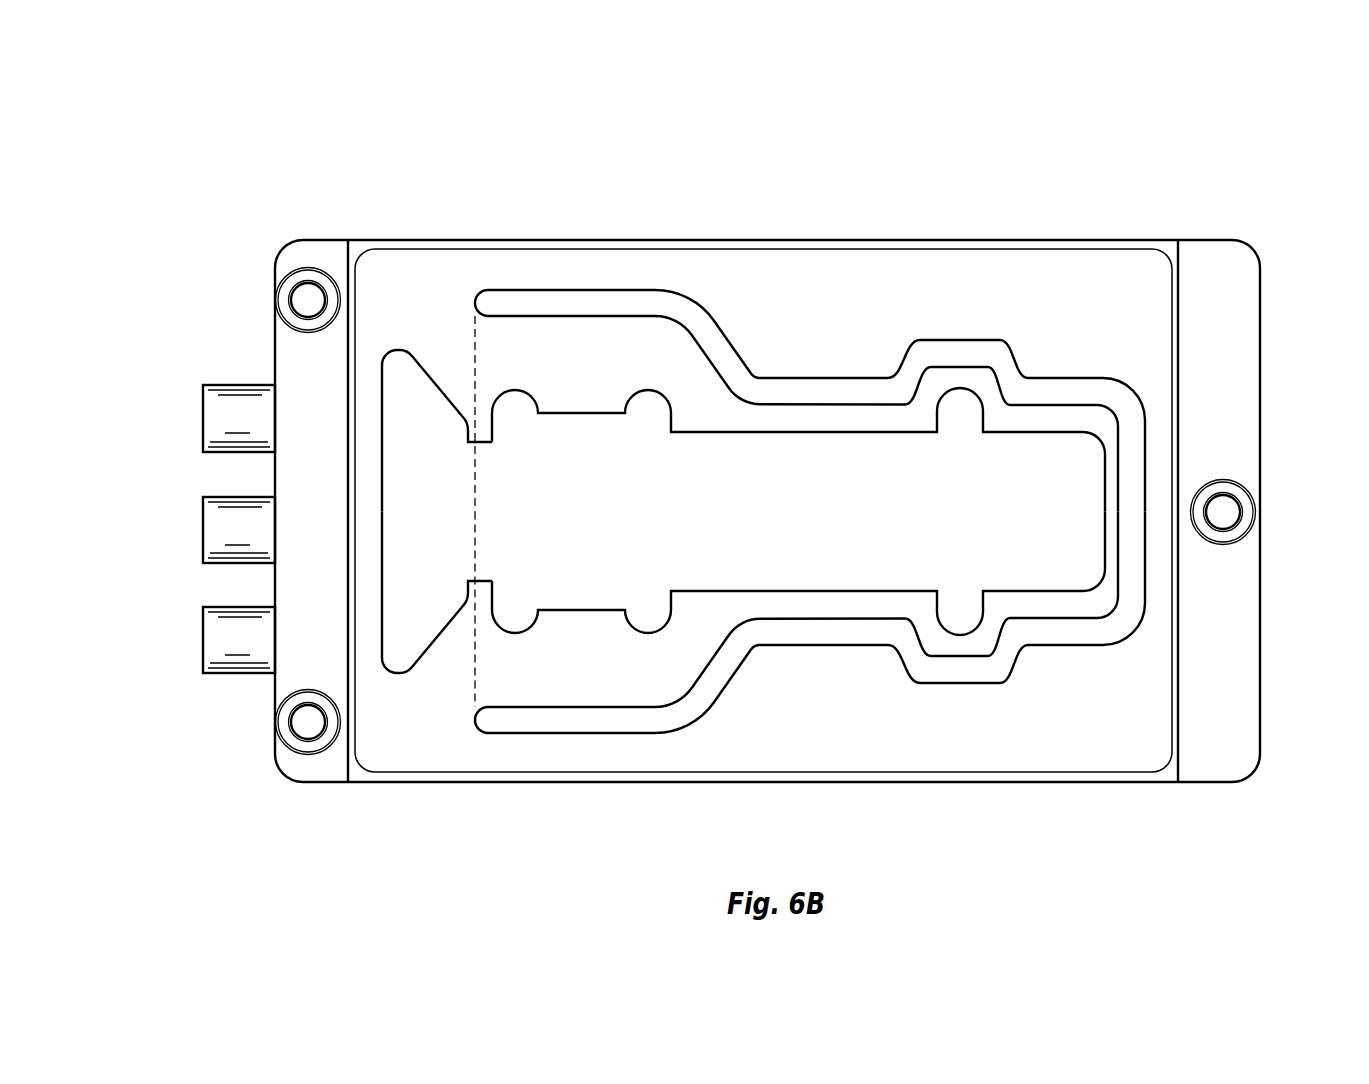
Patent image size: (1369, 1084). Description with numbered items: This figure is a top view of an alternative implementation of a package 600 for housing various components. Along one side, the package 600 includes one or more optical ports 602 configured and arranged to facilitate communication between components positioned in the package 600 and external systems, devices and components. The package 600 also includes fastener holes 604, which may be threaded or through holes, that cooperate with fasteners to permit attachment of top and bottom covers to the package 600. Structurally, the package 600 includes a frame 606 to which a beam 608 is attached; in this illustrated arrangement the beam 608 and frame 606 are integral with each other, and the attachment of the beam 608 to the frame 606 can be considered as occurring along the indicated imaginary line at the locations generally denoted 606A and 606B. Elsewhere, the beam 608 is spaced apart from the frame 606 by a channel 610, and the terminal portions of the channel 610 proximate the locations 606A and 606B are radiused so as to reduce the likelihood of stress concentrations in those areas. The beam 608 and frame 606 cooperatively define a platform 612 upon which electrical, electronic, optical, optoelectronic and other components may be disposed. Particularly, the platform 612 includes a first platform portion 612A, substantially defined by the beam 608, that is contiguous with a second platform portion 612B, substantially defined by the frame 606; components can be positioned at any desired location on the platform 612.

The package 600 is at (793, 170).
The optical ports 602 is at (203, 427).
The fastener holes 604 is at (303, 298).
The frame 606 is at (1065, 740).
The location 606A is at (473, 343).
The location 606B is at (475, 678).
The beam 608 is at (648, 672).
The channel 610 is at (1045, 390).
The platform 612 is at (692, 602).
The first platform portion 612A is at (577, 583).
The second platform portion 612B is at (400, 650).